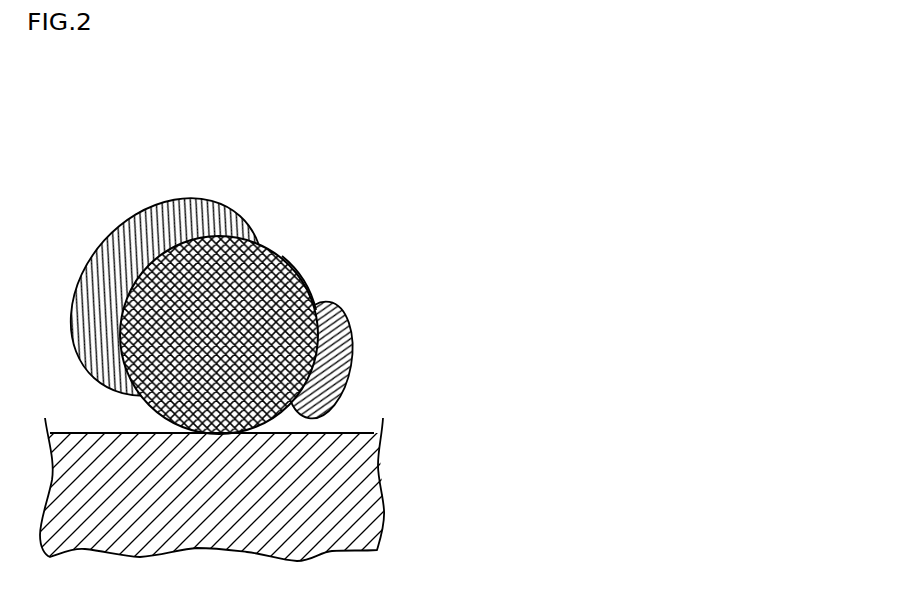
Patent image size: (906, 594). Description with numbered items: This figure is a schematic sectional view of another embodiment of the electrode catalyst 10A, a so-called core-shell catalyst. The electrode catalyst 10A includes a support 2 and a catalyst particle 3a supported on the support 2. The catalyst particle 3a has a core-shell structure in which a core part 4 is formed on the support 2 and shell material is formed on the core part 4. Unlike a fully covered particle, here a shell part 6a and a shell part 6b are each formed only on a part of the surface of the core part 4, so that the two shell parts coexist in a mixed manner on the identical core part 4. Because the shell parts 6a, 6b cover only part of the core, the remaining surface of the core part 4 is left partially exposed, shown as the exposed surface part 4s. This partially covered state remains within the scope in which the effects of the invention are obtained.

The electrode catalyst 10A is at (148, 182).
The catalyst particle 3a is at (555, 133).
The shell part 6a is at (183, 200).
The shell part 6b is at (350, 326).
The core part 4 is at (258, 414).
The exposed surface part of core part 4s is at (268, 238).
The support 2 is at (383, 507).